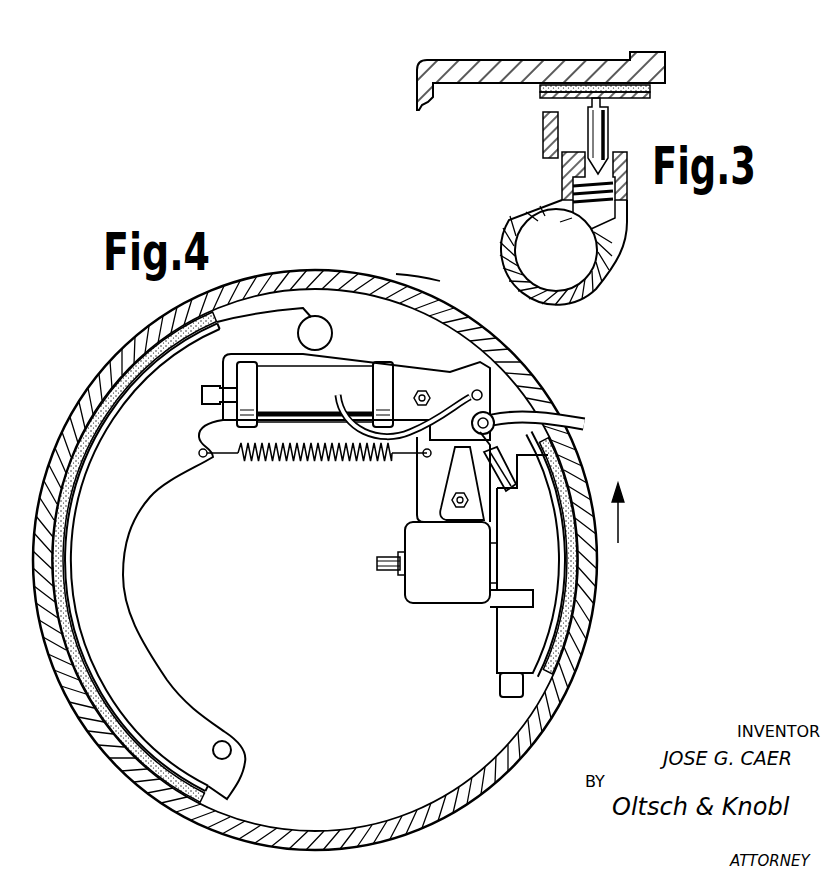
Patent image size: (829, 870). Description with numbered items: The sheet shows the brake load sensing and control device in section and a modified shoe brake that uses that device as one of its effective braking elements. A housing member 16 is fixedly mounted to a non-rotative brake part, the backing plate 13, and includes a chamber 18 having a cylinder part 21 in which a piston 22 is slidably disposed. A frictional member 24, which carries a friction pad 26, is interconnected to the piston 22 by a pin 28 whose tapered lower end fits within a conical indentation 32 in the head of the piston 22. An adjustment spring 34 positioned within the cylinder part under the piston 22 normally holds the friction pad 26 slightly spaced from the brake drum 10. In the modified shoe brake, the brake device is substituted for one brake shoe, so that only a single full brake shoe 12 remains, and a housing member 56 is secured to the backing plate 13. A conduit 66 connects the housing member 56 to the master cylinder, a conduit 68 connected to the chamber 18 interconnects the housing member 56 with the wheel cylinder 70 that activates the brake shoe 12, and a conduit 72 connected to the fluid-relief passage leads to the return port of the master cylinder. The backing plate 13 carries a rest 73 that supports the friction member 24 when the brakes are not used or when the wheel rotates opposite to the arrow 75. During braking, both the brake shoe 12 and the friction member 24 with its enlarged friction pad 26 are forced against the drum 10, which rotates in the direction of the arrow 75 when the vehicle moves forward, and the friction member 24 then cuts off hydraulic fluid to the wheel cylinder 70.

In FIG. 3, the brake drum 10 is at (654, 53).
In FIG. 4, the brake drum 10 is at (540, 723).
In FIG. 4, the brake shoe 12 is at (124, 640).
In FIG. 4, the backing plate 13 is at (418, 323).
In FIG. 3, the housing member 16 is at (612, 247).
In FIG. 3, the chamber 18 is at (523, 250).
In FIG. 3, the cylinder part 21 is at (618, 191).
In FIG. 3, the piston 22 is at (560, 174).
In FIG. 3, the frictional member 24 is at (641, 97).
In FIG. 4, the frictional member 24 is at (543, 549).
In FIG. 3, the friction pad 26 is at (543, 88).
In FIG. 4, the friction pad 26 is at (571, 605).
In FIG. 3, the pin 28 is at (608, 131).
In FIG. 3, the conical indentation 32 is at (584, 166).
In FIG. 3, the adjustment spring 34 is at (606, 204).
In FIG. 4, the housing member 56 is at (434, 597).
In FIG. 4, the conduit 66 is at (393, 556).
In FIG. 4, the conduit 68 is at (407, 441).
In FIG. 4, the wheel cylinder 70 is at (345, 373).
In FIG. 4, the conduit 72 is at (573, 418).
In FIG. 4, the rest 73 is at (500, 690).
In FIG. 4, the arrow 75 is at (623, 522).